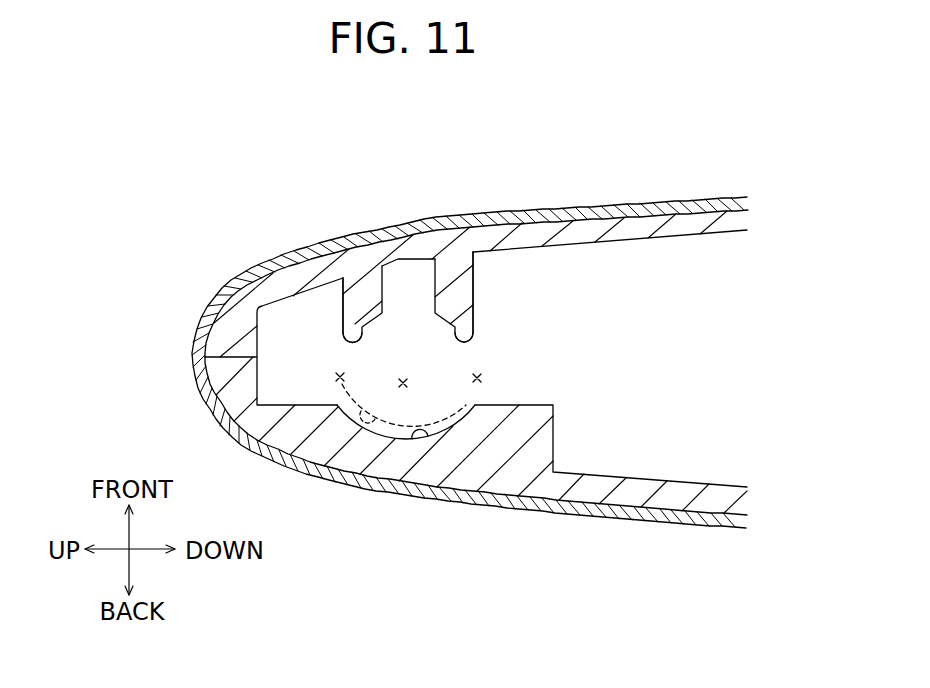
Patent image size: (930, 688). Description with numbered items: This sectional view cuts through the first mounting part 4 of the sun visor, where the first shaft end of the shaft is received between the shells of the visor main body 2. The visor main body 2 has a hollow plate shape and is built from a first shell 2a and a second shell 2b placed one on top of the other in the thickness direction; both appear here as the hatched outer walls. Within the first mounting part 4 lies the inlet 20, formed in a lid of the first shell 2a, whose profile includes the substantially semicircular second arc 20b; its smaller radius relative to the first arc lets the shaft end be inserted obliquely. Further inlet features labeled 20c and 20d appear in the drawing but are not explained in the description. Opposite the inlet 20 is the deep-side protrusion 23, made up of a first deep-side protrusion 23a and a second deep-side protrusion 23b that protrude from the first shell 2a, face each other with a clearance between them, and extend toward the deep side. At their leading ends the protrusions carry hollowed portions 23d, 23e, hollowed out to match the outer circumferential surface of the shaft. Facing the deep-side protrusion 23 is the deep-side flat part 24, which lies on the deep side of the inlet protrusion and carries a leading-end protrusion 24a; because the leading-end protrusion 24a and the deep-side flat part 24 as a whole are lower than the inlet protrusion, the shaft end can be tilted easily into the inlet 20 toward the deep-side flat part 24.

The visor main body 2 is at (687, 198).
The first shell 2a is at (588, 221).
The second shell 2b is at (646, 500).
The first mounting part 4 is at (333, 208).
The inlet 20 is at (403, 385).
The second arc 20b is at (362, 412).
The seat end 20c is at (478, 378).
The seat end 20d is at (340, 377).
The deep-side protrusion 23 is at (462, 252).
The first deep-side protrusion 23a is at (465, 307).
The second deep-side protrusion 23b is at (355, 312).
The hollowed portion 23d is at (470, 343).
The hollowed portion 23e is at (353, 347).
The deep-side flat part 24 is at (411, 487).
The leading-end protrusion 24a is at (432, 440).